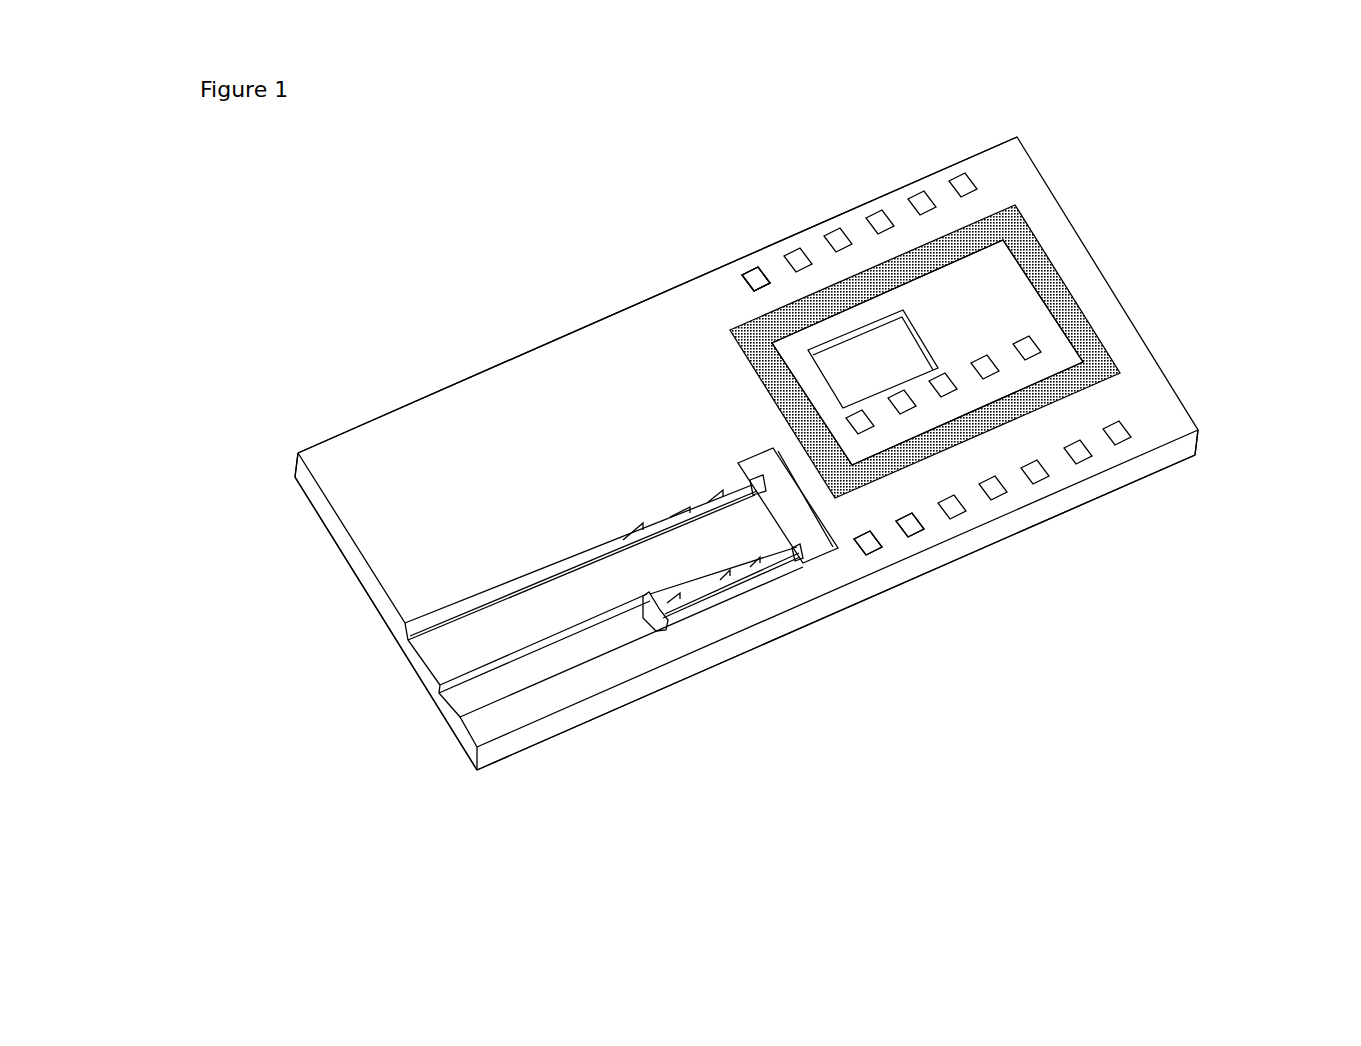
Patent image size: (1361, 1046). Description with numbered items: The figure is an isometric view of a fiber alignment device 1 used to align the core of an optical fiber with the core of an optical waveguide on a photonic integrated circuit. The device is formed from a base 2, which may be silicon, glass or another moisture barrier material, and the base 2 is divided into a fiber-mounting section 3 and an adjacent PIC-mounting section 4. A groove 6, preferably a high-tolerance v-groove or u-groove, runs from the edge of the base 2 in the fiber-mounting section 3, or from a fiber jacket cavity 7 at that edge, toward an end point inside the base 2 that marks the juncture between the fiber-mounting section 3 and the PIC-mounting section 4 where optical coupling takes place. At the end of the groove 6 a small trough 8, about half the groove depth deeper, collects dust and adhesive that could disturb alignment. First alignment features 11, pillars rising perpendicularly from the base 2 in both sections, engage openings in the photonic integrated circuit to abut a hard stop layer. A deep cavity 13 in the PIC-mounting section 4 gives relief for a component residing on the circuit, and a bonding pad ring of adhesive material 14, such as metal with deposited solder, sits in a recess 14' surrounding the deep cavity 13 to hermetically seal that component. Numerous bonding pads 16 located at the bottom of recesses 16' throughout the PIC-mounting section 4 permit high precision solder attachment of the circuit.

The fiber alignment device 1 is at (633, 238).
The base 2 is at (323, 528).
The fiber-mounting section 3 is at (405, 402).
The PIC-mounting section 4 is at (1157, 478).
The groove 6 is at (690, 515).
The fiber jacket cavity 7 is at (468, 697).
The trough 8 is at (798, 563).
The first alignment features 11 is at (913, 197).
The deep cavity 13 is at (873, 359).
The bonding pad ring of adhesive material 14 is at (953, 319).
The recess 14' is at (984, 332).
The bonding pads 16 is at (815, 433).
The recesses 16' is at (806, 419).